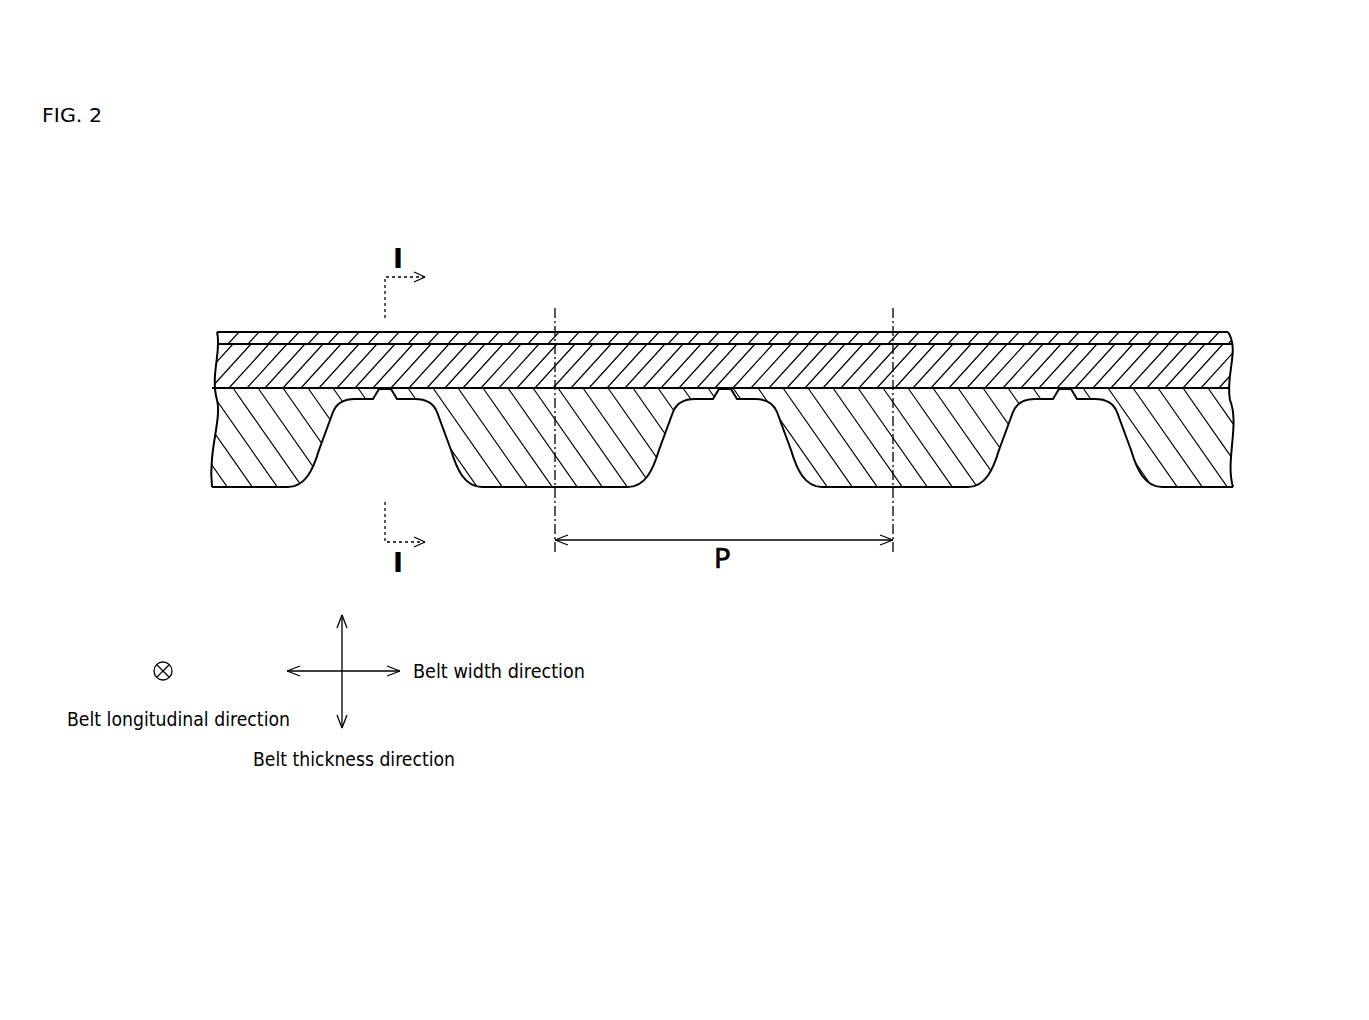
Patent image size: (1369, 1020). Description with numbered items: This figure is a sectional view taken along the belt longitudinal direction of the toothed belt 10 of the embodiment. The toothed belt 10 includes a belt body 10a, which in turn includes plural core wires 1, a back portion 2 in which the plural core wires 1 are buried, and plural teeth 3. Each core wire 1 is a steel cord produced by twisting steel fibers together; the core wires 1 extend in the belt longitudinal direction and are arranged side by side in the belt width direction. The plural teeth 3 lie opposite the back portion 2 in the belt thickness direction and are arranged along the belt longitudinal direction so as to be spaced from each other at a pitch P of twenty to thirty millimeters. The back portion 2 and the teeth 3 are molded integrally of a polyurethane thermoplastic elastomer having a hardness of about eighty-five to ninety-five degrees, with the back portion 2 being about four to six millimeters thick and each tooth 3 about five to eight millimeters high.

The toothed belt 10 is at (1052, 246).
The belt body 10a is at (1294, 321).
The core wire 1 is at (1226, 368).
The back portion 2 is at (1236, 337).
The tooth 3 is at (288, 453).